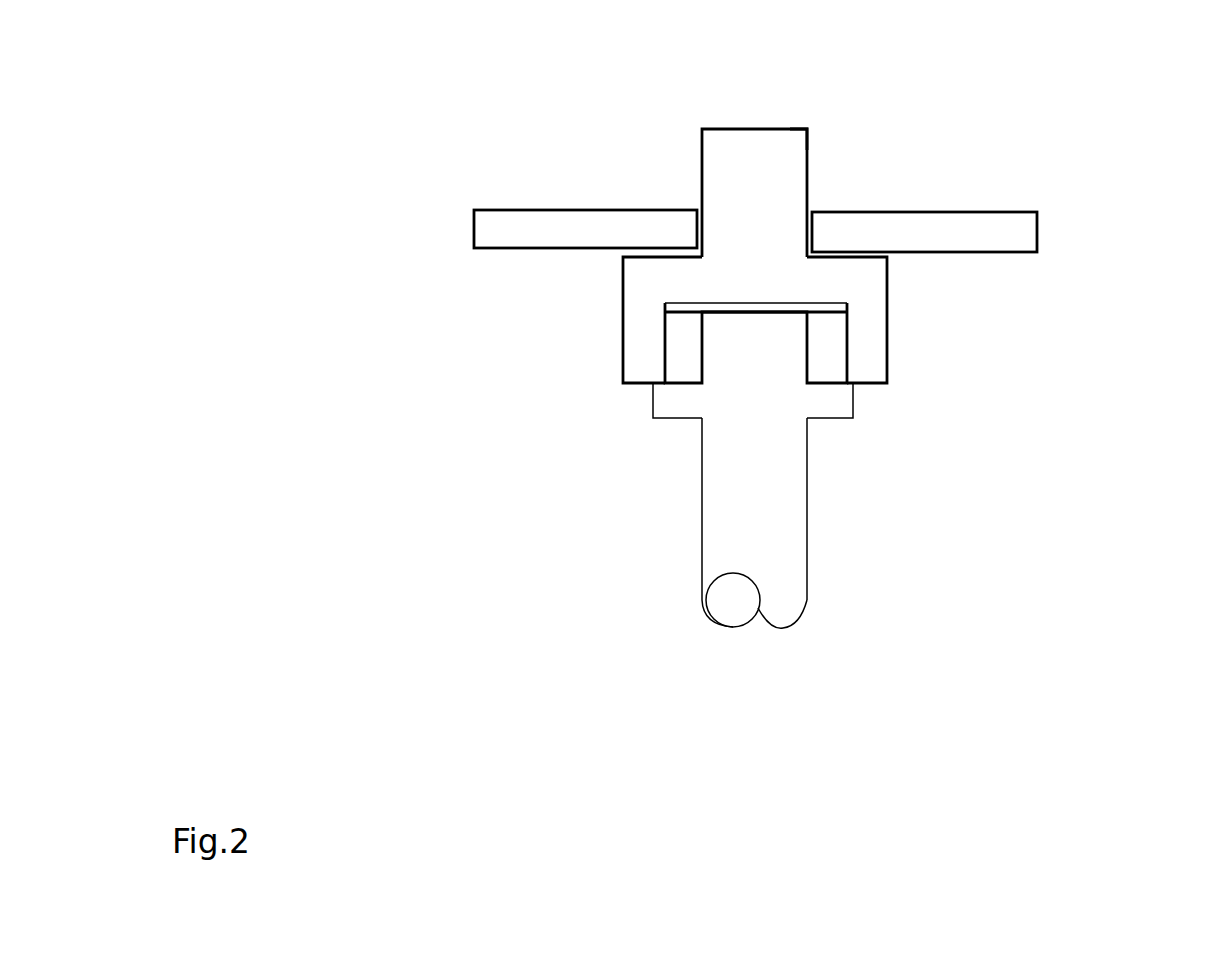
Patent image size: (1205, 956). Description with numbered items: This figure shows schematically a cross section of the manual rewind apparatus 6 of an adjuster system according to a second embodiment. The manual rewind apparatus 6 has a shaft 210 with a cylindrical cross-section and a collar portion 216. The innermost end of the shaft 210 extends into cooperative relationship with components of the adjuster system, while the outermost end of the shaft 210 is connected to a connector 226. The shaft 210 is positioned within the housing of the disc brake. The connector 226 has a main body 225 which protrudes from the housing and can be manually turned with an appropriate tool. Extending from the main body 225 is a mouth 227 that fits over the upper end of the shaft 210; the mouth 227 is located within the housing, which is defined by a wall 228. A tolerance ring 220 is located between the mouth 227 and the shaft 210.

The manual rewind apparatus 6 is at (985, 104).
The shaft 210 is at (775, 492).
The collar portion 216 is at (670, 397).
The tolerance ring 220 is at (822, 338).
The main body 225 is at (775, 178).
The connector 226 is at (811, 120).
The mouth 227 is at (870, 293).
The wall 228 is at (975, 223).